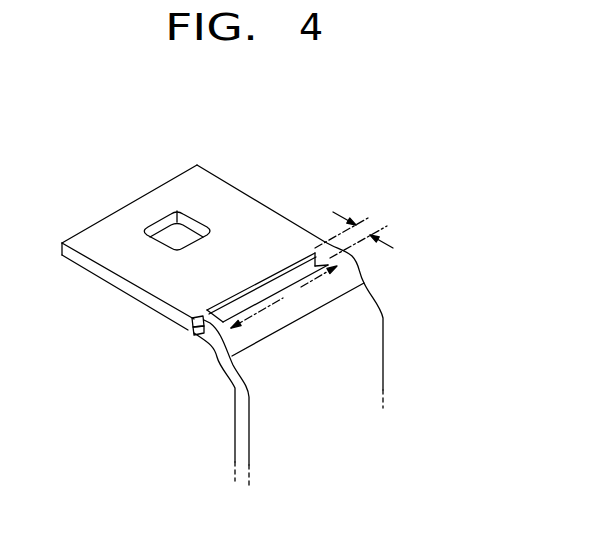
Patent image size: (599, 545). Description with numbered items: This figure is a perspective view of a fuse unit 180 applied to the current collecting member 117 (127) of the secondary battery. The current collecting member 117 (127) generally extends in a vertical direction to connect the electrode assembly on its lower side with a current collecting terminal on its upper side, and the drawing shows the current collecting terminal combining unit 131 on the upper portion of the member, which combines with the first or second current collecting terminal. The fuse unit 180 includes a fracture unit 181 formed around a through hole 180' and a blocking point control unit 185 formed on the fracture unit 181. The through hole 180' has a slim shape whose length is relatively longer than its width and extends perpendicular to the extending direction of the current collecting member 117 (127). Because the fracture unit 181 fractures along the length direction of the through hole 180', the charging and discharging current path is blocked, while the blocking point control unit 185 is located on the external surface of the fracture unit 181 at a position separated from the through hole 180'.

The current collecting terminal combining unit 131 is at (165, 237).
The current collecting member 117 is at (354, 325).
The current collecting member 127 is at (378, 355).
The through hole 180' is at (303, 240).
The fuse unit 180 is at (123, 340).
The fracture unit 181 is at (193, 326).
The blocking point control unit 185 is at (190, 335).